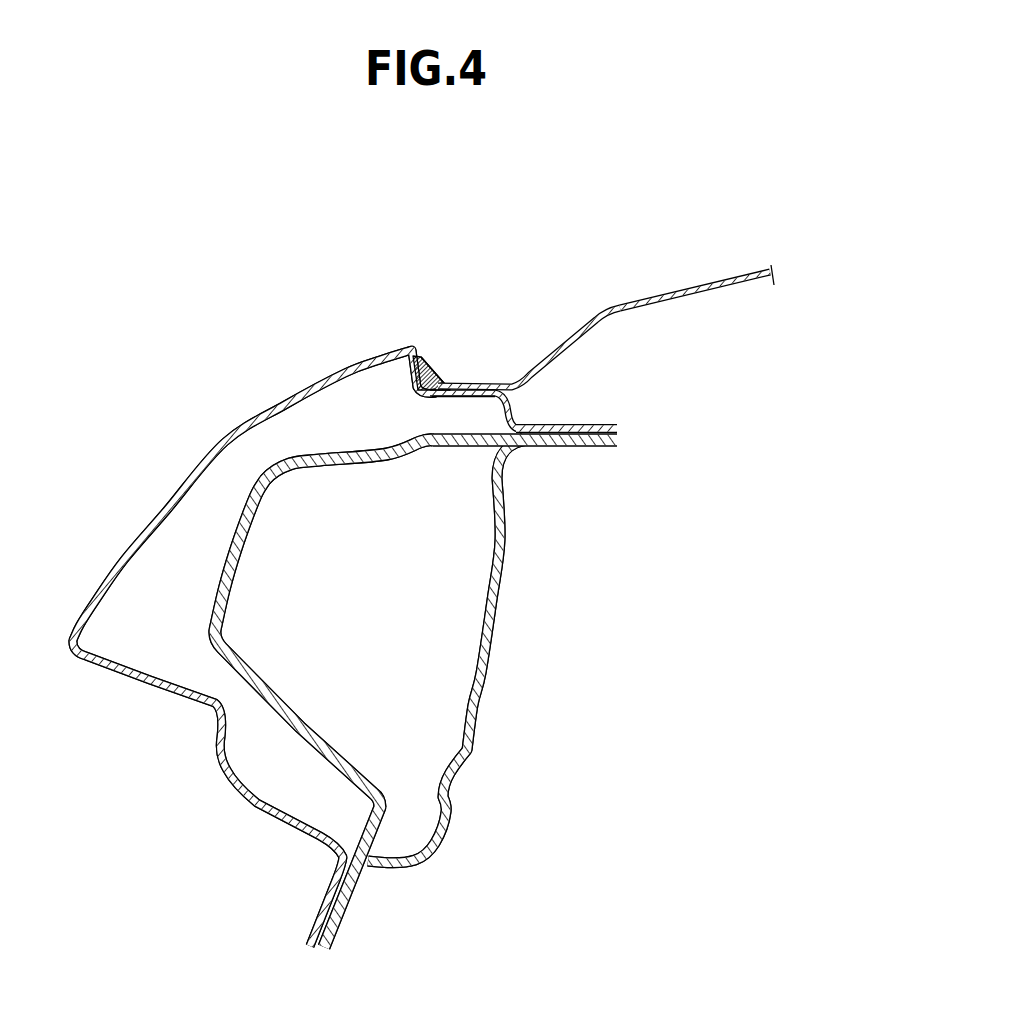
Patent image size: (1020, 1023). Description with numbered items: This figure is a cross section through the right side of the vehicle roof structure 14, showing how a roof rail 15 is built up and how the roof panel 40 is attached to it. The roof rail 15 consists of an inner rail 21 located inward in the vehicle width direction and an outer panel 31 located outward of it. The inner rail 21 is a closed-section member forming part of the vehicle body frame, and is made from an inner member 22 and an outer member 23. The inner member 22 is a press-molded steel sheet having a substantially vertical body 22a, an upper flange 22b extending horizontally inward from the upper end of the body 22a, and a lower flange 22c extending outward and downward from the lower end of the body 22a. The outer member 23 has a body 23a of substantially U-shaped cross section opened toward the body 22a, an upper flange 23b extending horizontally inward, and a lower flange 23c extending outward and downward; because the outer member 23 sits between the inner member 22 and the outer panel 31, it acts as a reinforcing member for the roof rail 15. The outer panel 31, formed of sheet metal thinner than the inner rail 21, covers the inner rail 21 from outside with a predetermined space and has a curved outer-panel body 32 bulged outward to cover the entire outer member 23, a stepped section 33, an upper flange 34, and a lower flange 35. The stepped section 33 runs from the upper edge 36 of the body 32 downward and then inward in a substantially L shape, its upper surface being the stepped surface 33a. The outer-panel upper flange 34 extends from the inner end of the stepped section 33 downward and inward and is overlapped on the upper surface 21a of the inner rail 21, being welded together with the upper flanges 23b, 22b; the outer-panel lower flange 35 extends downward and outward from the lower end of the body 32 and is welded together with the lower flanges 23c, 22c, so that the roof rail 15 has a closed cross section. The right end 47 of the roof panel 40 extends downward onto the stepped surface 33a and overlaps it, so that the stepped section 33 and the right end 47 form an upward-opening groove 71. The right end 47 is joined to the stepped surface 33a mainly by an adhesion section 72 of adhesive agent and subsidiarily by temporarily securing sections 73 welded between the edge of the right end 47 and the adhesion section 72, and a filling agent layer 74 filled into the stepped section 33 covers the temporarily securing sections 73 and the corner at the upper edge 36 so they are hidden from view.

The vehicle roof structure 14 is at (430, 536).
The roof rail 15 is at (395, 561).
The inner rail 21 is at (387, 685).
The upper surface of the inner rail 21a is at (489, 432).
The inner member 22 is at (504, 699).
The body of the inner member 22a is at (480, 740).
The upper flange of the inner member 22b is at (545, 457).
The lower flange of the inner member 22c is at (342, 910).
The outer member 23 is at (340, 648).
The body of the outer member 23a is at (243, 572).
The upper flange of the outer member 23b is at (448, 462).
The lower flange of the outer member 23c is at (364, 857).
The outer panel 31 is at (125, 672).
The outer-panel body 32 is at (313, 378).
The stepped section 33 is at (427, 408).
The stepped surface 33a is at (445, 372).
The outer-panel upper flange 34 is at (582, 423).
The outer-panel lower flange 35 is at (312, 900).
The upper edge of the outer-panel body 36 is at (412, 347).
The roof panel 40 is at (617, 264).
The right end of the roof panel 47 is at (515, 380).
The groove 71 is at (449, 356).
The adhesion section 72 is at (470, 388).
The temporarily securing section 73 is at (447, 399).
The filling agent layer 74 is at (437, 370).